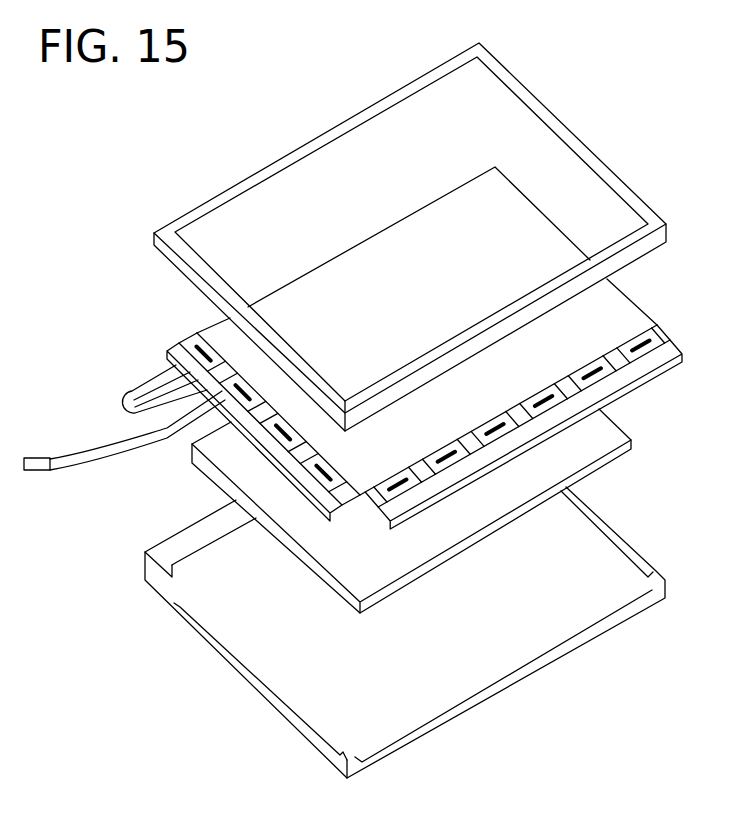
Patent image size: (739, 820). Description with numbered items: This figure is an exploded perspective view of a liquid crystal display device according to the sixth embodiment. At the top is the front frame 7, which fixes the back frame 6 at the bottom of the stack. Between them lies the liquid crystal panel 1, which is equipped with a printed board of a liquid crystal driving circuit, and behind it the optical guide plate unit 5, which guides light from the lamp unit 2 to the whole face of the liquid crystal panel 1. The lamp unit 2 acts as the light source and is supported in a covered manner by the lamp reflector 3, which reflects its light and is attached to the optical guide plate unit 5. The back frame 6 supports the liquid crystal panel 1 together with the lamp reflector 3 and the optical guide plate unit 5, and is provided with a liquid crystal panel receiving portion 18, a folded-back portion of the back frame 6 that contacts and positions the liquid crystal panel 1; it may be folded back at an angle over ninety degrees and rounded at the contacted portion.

The front frame 7 is at (649, 212).
The liquid crystal panel 1 is at (630, 313).
The lamp reflector 3 is at (147, 379).
The lamp unit 2 is at (167, 433).
The optical guide plate unit 5 is at (620, 435).
The back frame 6 is at (622, 563).
The liquid crystal panel receiving portion 18 is at (152, 584).